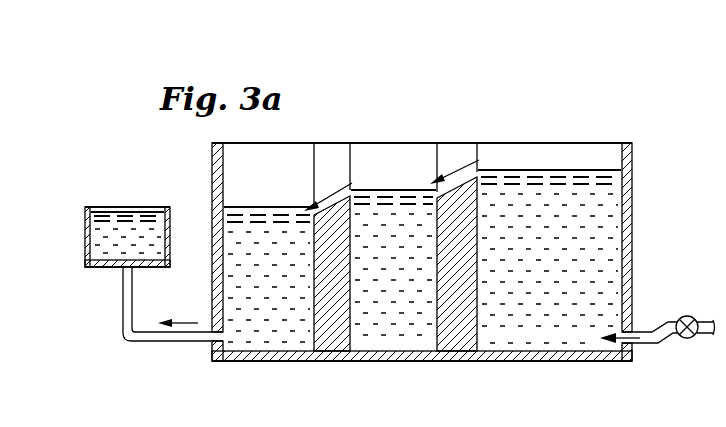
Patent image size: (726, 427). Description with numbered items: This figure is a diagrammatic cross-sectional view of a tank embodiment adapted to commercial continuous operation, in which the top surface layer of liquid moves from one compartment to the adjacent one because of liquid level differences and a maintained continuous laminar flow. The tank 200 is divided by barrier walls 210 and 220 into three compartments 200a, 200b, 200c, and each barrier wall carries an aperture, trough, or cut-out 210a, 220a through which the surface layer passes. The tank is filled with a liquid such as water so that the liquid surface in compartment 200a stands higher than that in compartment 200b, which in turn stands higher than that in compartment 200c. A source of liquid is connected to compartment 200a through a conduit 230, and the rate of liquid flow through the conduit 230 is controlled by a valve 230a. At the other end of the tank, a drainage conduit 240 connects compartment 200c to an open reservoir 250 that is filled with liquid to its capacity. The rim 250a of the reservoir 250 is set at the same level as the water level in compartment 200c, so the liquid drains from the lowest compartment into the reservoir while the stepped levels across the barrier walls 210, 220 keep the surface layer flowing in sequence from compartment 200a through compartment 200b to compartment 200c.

The tank 200 is at (194, 158).
The first compartment 200a is at (538, 333).
The second compartment 200b is at (377, 330).
The third compartment 200c is at (255, 333).
The barrier wall 210 is at (460, 343).
The aperture, trough, or cut-out 210a is at (453, 177).
The barrier wall 220 is at (332, 342).
The aperture, trough, or cut-out 220a is at (337, 208).
The conduit 230 is at (645, 332).
The valve 230a is at (678, 334).
The drainage conduit 240 is at (182, 335).
The open reservoir 250 is at (117, 245).
The rim 250a is at (168, 207).